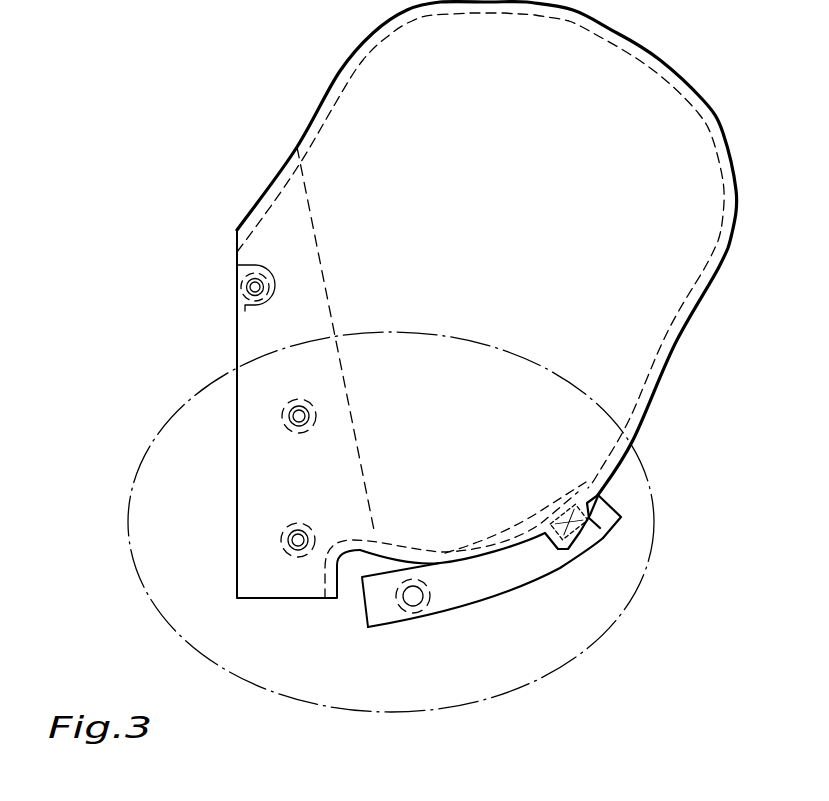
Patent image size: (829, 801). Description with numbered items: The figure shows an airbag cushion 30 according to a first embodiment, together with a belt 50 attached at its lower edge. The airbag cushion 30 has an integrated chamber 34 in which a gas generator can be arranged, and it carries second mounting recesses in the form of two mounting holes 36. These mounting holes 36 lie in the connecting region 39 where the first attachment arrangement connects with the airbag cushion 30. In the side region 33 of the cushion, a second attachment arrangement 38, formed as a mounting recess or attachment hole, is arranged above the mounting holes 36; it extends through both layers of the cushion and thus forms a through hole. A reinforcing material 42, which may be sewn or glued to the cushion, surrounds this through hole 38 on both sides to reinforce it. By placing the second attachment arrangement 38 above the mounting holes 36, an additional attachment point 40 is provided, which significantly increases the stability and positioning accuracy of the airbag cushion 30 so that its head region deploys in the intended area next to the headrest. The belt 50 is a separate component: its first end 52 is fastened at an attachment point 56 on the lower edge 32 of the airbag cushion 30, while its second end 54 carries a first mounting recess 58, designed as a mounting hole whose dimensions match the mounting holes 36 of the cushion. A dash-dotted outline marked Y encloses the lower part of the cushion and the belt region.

The airbag cushion 30 is at (333, 62).
The lower edge 32 is at (600, 497).
The side region 33 is at (283, 233).
The integrated chamber 34 is at (265, 378).
The second mounting recesses 36 is at (297, 422).
The second attachment arrangement 38 is at (249, 283).
The connecting region 39 is at (265, 478).
The additional attachment point 40 is at (205, 294).
The reinforcing material 42 is at (245, 309).
The belt 50 is at (530, 600).
The first end 52 is at (618, 505).
The second end 54 is at (372, 612).
The attachment point 56 is at (582, 545).
The first mounting recess 58 is at (416, 608).
The detail region Y is at (606, 636).